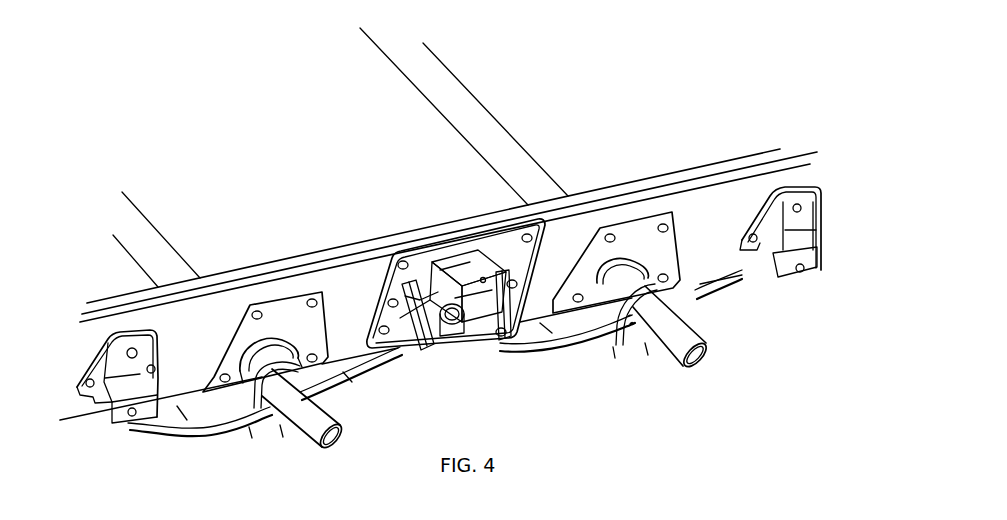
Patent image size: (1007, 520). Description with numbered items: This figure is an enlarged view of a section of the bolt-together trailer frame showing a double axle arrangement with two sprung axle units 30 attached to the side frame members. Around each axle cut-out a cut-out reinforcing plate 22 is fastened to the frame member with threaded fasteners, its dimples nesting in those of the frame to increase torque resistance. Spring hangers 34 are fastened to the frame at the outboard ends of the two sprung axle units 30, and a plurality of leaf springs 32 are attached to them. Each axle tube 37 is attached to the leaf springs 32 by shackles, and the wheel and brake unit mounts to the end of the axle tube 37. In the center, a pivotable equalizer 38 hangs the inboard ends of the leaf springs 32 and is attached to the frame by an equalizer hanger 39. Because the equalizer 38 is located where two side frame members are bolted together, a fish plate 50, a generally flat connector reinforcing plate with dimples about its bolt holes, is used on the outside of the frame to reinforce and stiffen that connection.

The sprung axle unit 30 is at (170, 212).
The cut-out reinforcing plate 22 is at (313, 323).
The leaf springs 32 is at (385, 370).
The spring hangers 34 is at (157, 390).
The axle tube 37 is at (312, 445).
The pivotable equalizer 38 is at (468, 306).
The equalizer hanger 39 is at (470, 260).
The fish plate 50 is at (393, 262).